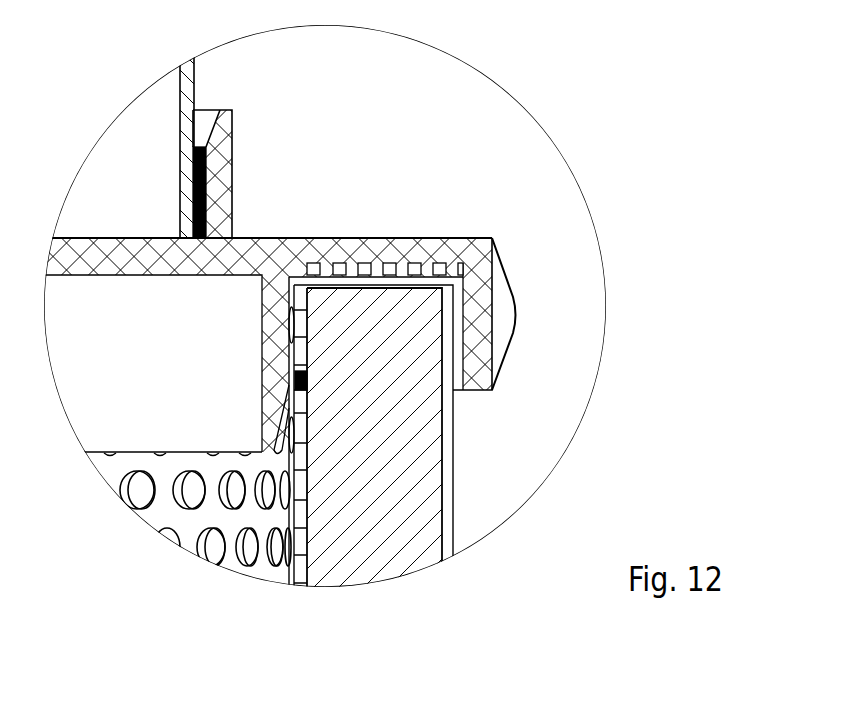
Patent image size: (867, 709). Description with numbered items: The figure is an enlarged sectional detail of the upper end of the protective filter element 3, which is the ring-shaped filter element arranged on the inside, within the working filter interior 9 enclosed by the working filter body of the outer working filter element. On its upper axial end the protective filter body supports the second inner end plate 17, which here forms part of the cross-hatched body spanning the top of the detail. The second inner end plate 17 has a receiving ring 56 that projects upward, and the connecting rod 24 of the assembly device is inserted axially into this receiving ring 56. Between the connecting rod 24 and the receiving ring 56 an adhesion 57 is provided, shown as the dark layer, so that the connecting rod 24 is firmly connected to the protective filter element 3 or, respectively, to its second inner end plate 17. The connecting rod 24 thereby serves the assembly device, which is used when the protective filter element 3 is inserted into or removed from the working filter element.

The protective filter element 3 is at (468, 448).
The working filter interior 9 is at (397, 145).
The second inner end plate 17 is at (446, 228).
The connecting rod 24 is at (189, 83).
The receiving ring 56 is at (221, 172).
The adhesion 57 is at (183, 182).